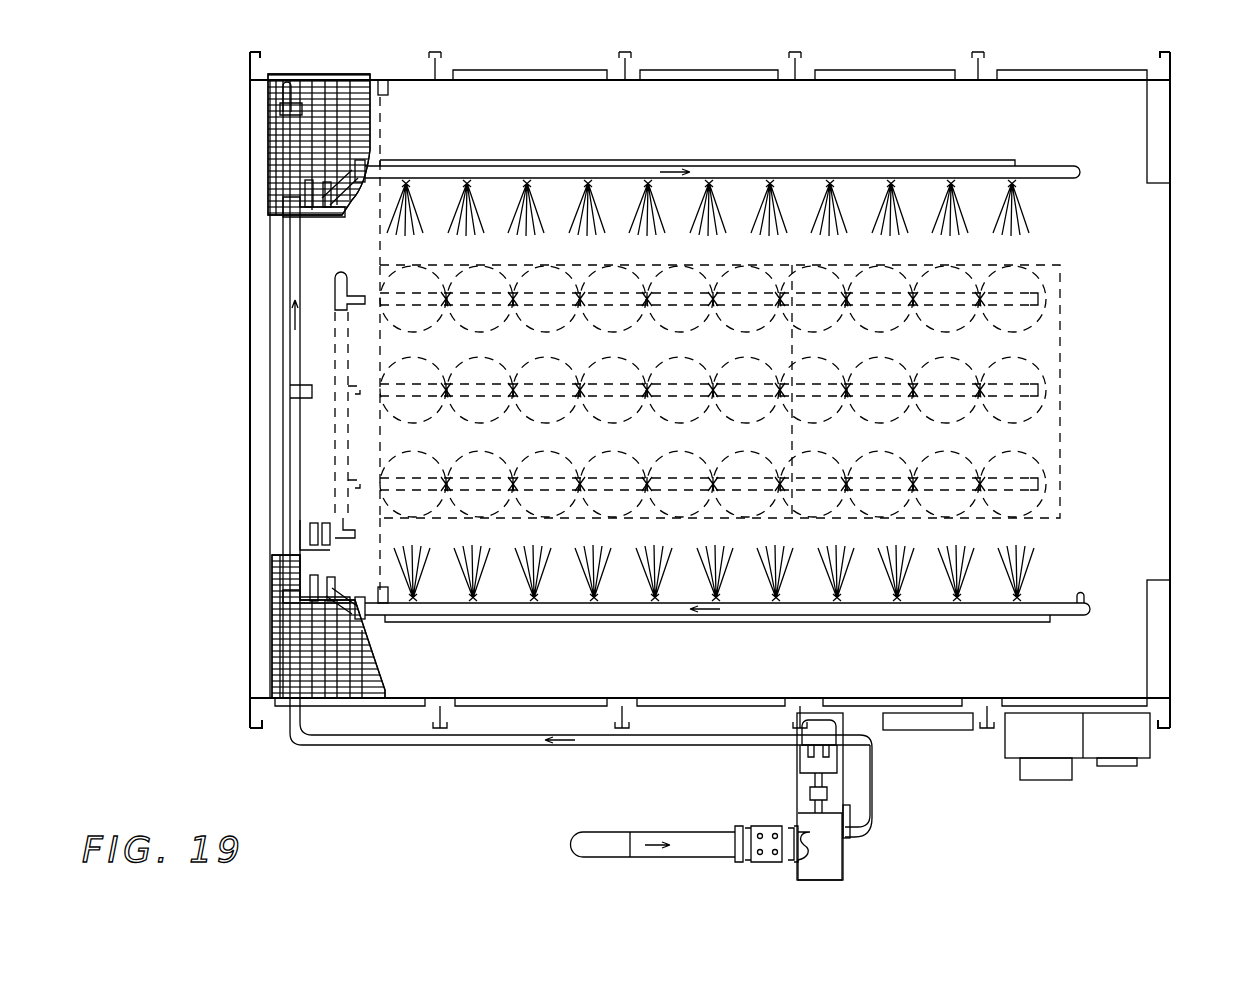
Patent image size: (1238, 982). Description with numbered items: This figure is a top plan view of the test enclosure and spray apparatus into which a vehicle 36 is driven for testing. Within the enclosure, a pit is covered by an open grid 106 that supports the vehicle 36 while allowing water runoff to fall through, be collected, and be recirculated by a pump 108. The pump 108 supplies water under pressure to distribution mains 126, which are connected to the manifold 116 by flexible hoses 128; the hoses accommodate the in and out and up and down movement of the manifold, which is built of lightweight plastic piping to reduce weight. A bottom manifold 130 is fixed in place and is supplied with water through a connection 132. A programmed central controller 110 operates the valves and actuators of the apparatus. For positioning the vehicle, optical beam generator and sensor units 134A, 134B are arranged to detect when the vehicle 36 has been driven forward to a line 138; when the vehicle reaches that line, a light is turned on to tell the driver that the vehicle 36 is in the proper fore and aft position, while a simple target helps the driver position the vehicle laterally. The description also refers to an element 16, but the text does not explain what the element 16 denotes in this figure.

The upper spray header pipe 16 is at (481, 163).
The vehicle 36 is at (584, 267).
The open grid 106 is at (318, 128).
The pump 108 is at (796, 762).
The programmed central controller 110 is at (1003, 769).
The manifold 116 is at (465, 625).
The distribution mains 126 is at (342, 750).
The flexible hoses 128 is at (345, 172).
The bottom manifold 130 is at (334, 352).
The connection 132 is at (328, 526).
The optical beam generator and sensor unit 134A is at (391, 95).
The optical beam generator and sensor unit 134B is at (373, 588).
The line 138 is at (380, 243).